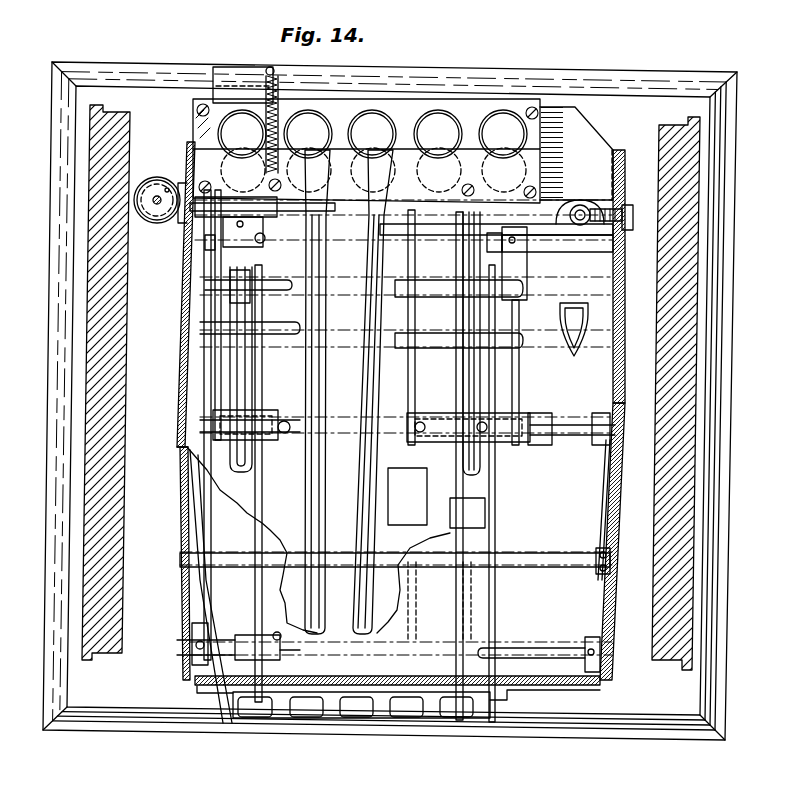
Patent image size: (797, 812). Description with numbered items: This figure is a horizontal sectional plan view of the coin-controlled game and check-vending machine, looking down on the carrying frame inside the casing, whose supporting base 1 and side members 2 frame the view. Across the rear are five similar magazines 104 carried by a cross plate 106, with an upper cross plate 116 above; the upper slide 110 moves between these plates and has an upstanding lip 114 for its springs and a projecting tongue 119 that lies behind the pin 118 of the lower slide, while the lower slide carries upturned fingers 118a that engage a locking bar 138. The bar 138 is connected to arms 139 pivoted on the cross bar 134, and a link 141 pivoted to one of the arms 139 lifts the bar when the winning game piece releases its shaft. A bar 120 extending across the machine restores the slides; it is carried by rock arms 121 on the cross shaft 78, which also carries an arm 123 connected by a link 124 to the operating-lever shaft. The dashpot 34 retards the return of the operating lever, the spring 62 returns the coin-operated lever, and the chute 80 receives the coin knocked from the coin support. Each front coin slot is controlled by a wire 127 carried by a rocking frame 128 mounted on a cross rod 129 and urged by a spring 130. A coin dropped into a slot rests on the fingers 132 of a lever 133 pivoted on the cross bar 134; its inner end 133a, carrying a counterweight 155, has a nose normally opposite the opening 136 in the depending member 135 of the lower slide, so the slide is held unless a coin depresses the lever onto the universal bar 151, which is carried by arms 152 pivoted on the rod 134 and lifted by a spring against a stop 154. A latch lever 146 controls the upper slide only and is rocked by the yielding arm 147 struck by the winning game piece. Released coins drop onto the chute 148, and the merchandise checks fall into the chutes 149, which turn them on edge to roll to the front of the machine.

The supporting base 1 is at (627, 113).
The side members 2 is at (88, 392).
The dashpot 34 is at (157, 196).
The spring 62 is at (580, 204).
The cross shaft 78 is at (556, 245).
The chute 80 is at (569, 360).
The magazines 104 is at (240, 112).
The cross plate 106 is at (565, 120).
The upper slide 110 is at (238, 82).
The upstanding lip 114 is at (272, 72).
The upper cross plate 116 is at (205, 132).
The pin 118 is at (232, 237).
The upturned fingers 118a is at (380, 250).
The projecting tongue 119 is at (236, 191).
The bar 120 is at (266, 291).
The rock arms 121 is at (215, 285).
The arm 123 is at (213, 207).
The link 124 is at (193, 183).
The wire 127 is at (255, 664).
The rocking frame 128 is at (245, 640).
The cross rod 129 is at (500, 650).
The spring 130 is at (280, 636).
The fingers 132 is at (233, 715).
The lever 133 is at (262, 500).
The inner end portion of lever 133a is at (252, 355).
The cross bar 134 is at (284, 421).
The depending member 135 is at (252, 250).
The opening 136 is at (250, 285).
The locking bar 138 is at (426, 240).
The arms 139 is at (215, 346).
The link 141 is at (204, 320).
The latch lever 146 is at (480, 318).
The yielding arm 147 is at (478, 516).
The chute 148 is at (336, 716).
The chutes 149 is at (323, 376).
The universal bar 151 is at (525, 556).
The arms 152 is at (195, 510).
The stop 154 is at (600, 578).
The counterweight 155 is at (238, 320).